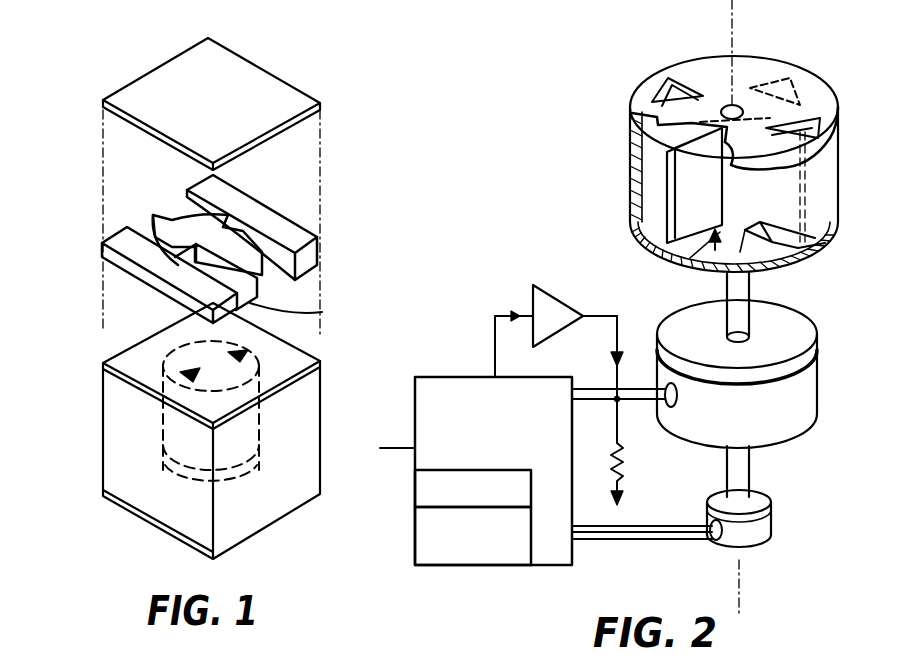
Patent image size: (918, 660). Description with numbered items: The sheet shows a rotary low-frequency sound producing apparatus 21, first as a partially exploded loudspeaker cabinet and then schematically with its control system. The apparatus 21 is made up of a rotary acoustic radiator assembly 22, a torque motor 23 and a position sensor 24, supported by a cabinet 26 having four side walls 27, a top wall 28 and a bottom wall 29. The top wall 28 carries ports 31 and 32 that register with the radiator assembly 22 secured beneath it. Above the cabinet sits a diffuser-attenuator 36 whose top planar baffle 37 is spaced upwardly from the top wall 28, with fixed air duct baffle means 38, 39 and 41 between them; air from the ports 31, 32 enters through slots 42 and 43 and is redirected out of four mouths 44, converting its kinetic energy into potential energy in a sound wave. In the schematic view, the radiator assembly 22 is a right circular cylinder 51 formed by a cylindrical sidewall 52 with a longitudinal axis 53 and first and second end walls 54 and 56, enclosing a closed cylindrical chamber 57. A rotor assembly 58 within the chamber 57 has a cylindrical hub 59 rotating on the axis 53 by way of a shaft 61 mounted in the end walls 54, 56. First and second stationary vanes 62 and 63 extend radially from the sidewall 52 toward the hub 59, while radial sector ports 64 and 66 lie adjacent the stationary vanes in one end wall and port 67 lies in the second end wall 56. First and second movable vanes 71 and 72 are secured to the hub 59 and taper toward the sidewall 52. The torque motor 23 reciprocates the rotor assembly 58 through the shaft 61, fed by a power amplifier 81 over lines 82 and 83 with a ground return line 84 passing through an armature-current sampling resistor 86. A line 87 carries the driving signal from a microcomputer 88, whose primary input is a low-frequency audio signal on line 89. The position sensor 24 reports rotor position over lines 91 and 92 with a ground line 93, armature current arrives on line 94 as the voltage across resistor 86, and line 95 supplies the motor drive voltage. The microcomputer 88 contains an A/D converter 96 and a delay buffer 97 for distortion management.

In FIG. 1, the rotary low-frequency sound producing apparatus 21 is at (125, 462).
In FIG. 2, the rotary low-frequency sound producing apparatus 21 is at (476, 242).
In FIG. 1, the rotary acoustic radiator assembly 22 is at (262, 418).
In FIG. 2, the rotary acoustic radiator assembly 22 is at (548, 58).
In FIG. 1, the torque motor 23 is at (250, 462).
In FIG. 2, the torque motor 23 is at (806, 375).
In FIG. 1, the position sensor 24 is at (182, 480).
In FIG. 2, the position sensor 24 is at (762, 527).
In FIG. 1, the cabinet 26 is at (322, 401).
In FIG. 1, the side walls 27 is at (305, 448).
In FIG. 1, the top wall 28 is at (125, 370).
In FIG. 1, the bottom wall 29 is at (250, 540).
In FIG. 1, the port 31 is at (187, 370).
In FIG. 1, the port 32 is at (242, 352).
In FIG. 1, the diffuser-attenuator 36 is at (98, 60).
In FIG. 1, the top planar baffle 37 is at (253, 82).
In FIG. 1, the fixed air duct baffle means 38 is at (118, 266).
In FIG. 1, the fixed air duct baffle means 39 is at (172, 234).
In FIG. 1, the fixed air duct baffle means 41 is at (310, 258).
In FIG. 1, the slot 42 is at (178, 258).
In FIG. 1, the slot 43 is at (230, 215).
In FIG. 1, the mouths 44 is at (148, 225).
In FIG. 2, the right circular cylinder 51 is at (825, 158).
In FIG. 2, the cylindrical sidewall 52 is at (655, 203).
In FIG. 2, the longitudinal axis 53 is at (733, 50).
In FIG. 2, the first end wall 54 is at (714, 78).
In FIG. 2, the second end wall 56 is at (690, 262).
In FIG. 2, the closed cylindrical chamber 57 is at (633, 145).
In FIG. 2, the rotor assembly 58 is at (702, 265).
In FIG. 2, the cylindrical hub 59 is at (745, 200).
In FIG. 2, the shaft 61 is at (750, 282).
In FIG. 2, the first stationary vane 62 is at (818, 90).
In FIG. 2, the second stationary vane 63 is at (678, 80).
In FIG. 2, the first port 64 is at (818, 122).
In FIG. 2, the second port 66 is at (652, 82).
In FIG. 2, the port 67 is at (790, 262).
In FIG. 2, the first movable vane 71 is at (645, 180).
In FIG. 2, the second movable vane 72 is at (768, 80).
In FIG. 2, the power amplifier 81 is at (535, 290).
In FIG. 2, the line 82 is at (585, 313).
In FIG. 2, the line 83 is at (630, 389).
In FIG. 2, the ground return line 84 is at (640, 400).
In FIG. 2, the armature-current sampling resistor 86 is at (622, 468).
In FIG. 2, the line 87 is at (495, 315).
In FIG. 2, the microcomputer 88 is at (460, 377).
In FIG. 2, the line 89 is at (396, 448).
In FIG. 2, the line 91 is at (596, 545).
In FIG. 2, the line 92 is at (630, 540).
In FIG. 2, the line 93 is at (668, 541).
In FIG. 2, the line 94 is at (594, 400).
In FIG. 2, the line 95 is at (590, 388).
In FIG. 2, the A/D converter 96 is at (415, 490).
In FIG. 2, the delay buffer 97 is at (415, 541).